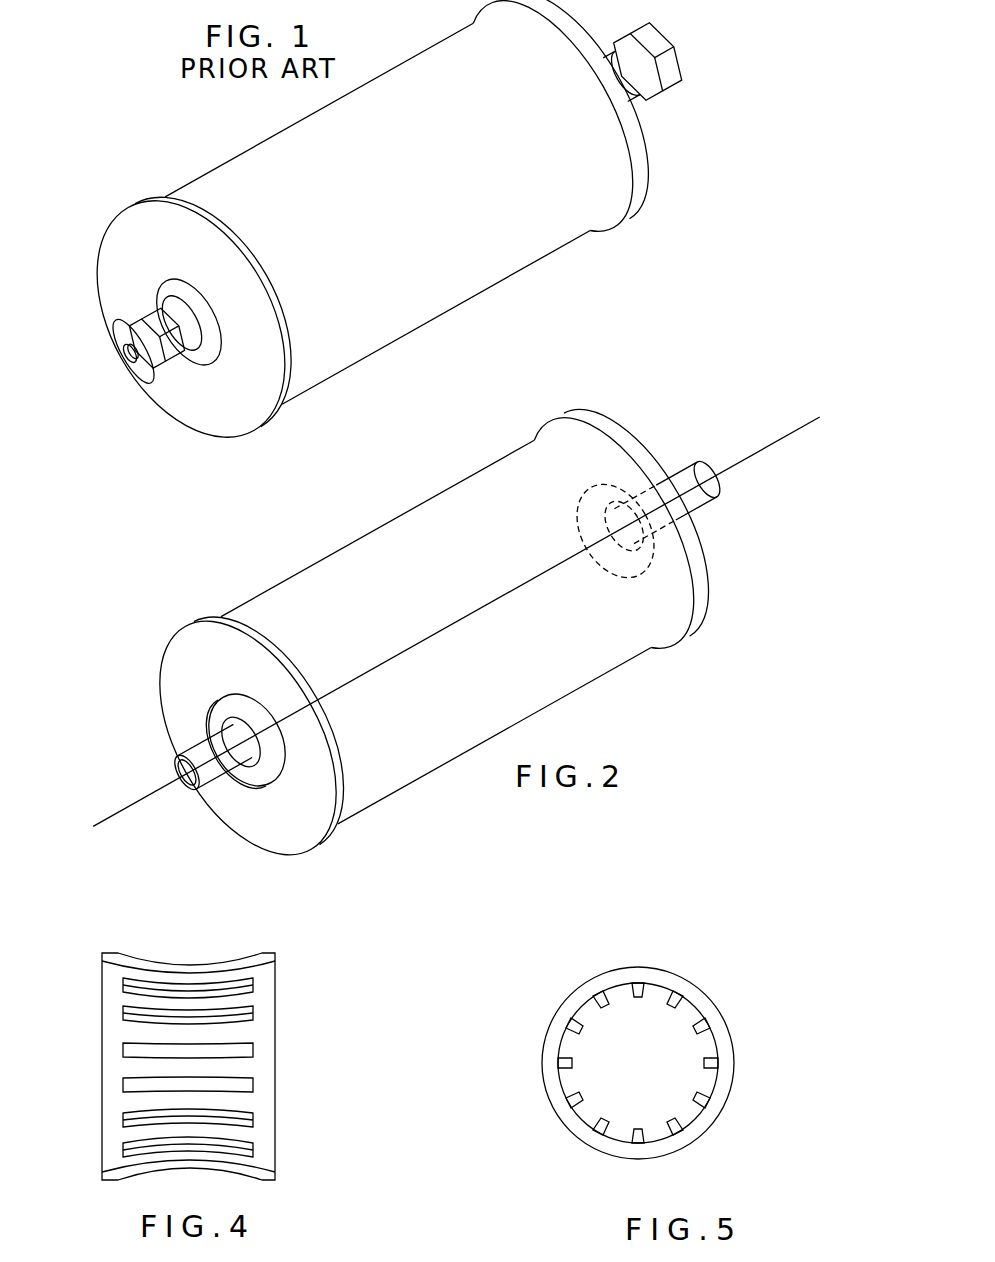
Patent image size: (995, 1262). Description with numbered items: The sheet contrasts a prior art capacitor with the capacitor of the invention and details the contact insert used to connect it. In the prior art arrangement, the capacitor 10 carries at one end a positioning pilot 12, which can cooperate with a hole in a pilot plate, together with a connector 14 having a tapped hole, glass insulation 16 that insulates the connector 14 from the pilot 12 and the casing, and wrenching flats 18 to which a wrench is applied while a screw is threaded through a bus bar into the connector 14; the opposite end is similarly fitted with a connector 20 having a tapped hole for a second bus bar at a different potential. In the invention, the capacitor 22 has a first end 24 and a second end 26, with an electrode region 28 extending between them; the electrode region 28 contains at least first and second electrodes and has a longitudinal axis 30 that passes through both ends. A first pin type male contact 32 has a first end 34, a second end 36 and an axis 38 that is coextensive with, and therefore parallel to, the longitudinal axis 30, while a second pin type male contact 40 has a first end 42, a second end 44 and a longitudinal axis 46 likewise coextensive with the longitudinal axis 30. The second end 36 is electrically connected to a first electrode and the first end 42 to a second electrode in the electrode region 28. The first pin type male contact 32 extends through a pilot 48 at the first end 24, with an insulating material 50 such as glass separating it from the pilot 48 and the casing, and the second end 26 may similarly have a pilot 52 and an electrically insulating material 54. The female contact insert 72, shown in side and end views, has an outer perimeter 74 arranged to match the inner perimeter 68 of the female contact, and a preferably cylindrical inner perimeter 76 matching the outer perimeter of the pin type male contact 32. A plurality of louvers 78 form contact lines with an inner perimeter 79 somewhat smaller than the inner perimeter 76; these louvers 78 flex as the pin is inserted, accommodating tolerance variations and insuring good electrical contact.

In FIG. 1, the capacitor 10 is at (202, 176).
In FIG. 1, the pilot 12 is at (158, 295).
In FIG. 1, the connector 14 is at (127, 362).
In FIG. 1, the glass insulation 16 is at (153, 387).
In FIG. 1, the wrenching flats 18 is at (133, 302).
In FIG. 1, the connector 20 is at (680, 90).
In FIG. 2, the capacitor 22 is at (352, 512).
In FIG. 2, the first end 24 is at (198, 632).
In FIG. 2, the second end 26 is at (578, 424).
In FIG. 2, the electrode region 28 is at (472, 478).
In FIG. 2, the longitudinal axis 30 is at (800, 428).
In FIG. 2, the first pin type male contact 32 is at (179, 755).
In FIG. 2, the first end 34 is at (177, 782).
In FIG. 2, the second end 36 is at (222, 795).
In FIG. 2, the axis 38 is at (115, 814).
In FIG. 2, the second pin type male contact 40 is at (702, 498).
In FIG. 2, the first end 42 is at (580, 528).
In FIG. 2, the second end 44 is at (717, 484).
In FIG. 2, the longitudinal axis 46 is at (745, 458).
In FIG. 2, the pilot 48 is at (262, 795).
In FIG. 2, the insulating material 50 is at (225, 706).
In FIG. 2, the pilot 52 is at (592, 575).
In FIG. 2, the electrically insulating material 54 is at (622, 565).
In FIG. 5, the inner perimeter 68 is at (548, 1090).
In FIG. 4, the female contact insert 72 is at (268, 1010).
In FIG. 5, the female contact insert 72 is at (686, 978).
In FIG. 4, the outer perimeter 74 is at (262, 958).
In FIG. 5, the outer perimeter 74 is at (553, 1018).
In FIG. 5, the inner perimeter 76 is at (610, 994).
In FIG. 4, the louvers 78 is at (222, 1035).
In FIG. 5, the louvers 78 is at (700, 1030).
In FIG. 5, the inner perimeter 79 is at (636, 1005).